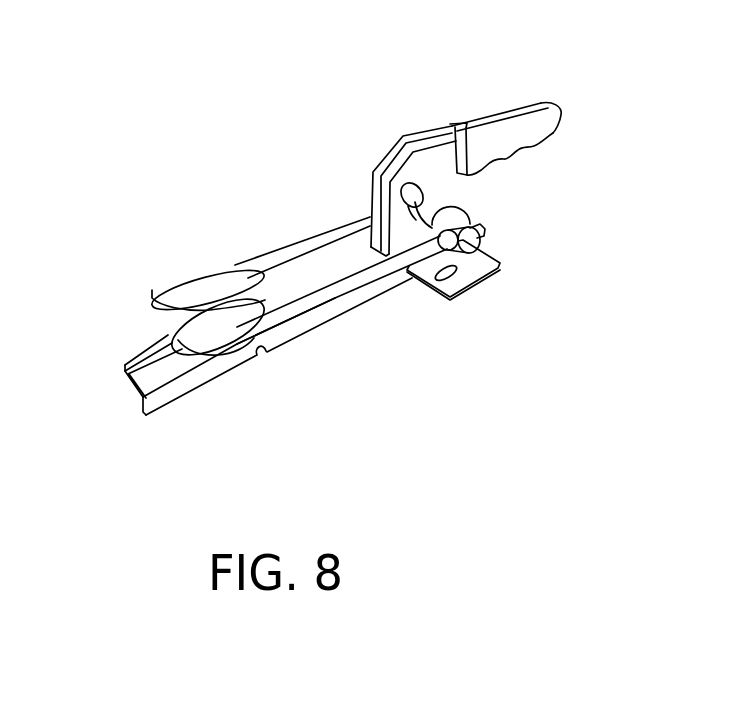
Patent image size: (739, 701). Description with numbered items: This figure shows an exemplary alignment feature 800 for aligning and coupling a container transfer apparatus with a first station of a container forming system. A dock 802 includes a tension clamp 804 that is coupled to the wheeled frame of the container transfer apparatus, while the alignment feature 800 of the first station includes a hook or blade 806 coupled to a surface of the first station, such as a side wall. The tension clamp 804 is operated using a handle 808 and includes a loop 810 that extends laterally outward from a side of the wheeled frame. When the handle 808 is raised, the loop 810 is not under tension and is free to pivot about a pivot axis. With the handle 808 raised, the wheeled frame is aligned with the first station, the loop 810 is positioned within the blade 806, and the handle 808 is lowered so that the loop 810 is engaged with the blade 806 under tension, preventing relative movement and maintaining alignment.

The alignment feature 800 is at (140, 347).
The dock 802 is at (408, 104).
The tension clamp 804 is at (470, 272).
The blade 806 is at (190, 277).
The handle 808 is at (530, 128).
The loop 810 is at (340, 295).